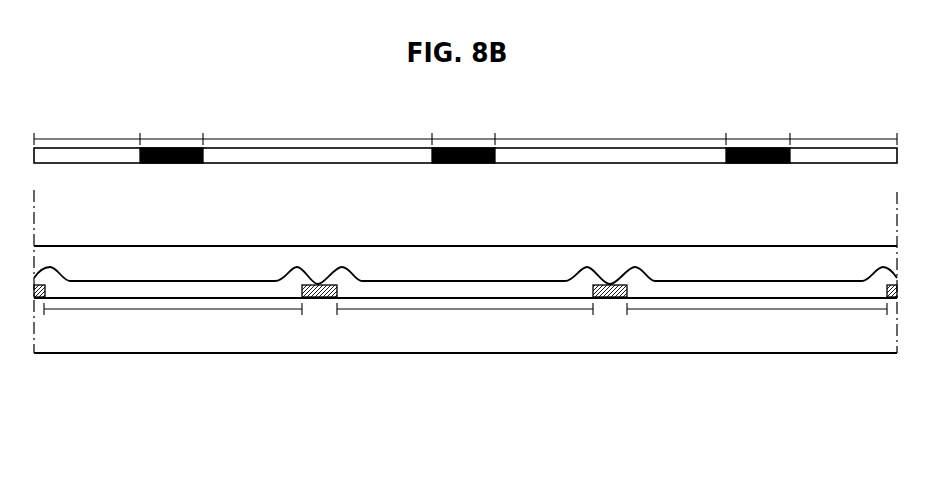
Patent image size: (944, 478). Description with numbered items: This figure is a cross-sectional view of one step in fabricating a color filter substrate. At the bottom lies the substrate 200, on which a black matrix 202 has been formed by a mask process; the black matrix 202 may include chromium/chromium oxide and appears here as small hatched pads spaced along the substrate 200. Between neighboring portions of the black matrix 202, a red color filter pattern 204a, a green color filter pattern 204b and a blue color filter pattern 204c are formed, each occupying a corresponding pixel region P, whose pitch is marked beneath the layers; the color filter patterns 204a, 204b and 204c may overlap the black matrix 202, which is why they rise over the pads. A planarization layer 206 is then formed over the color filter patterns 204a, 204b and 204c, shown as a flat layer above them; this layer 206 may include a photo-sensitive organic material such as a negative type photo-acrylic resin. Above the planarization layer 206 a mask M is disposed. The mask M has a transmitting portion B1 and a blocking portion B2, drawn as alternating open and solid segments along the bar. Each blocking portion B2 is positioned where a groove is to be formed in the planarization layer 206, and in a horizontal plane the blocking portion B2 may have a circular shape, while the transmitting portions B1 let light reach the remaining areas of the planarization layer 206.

The substrate 200 is at (861, 338).
The black matrix 202 is at (318, 302).
The red color filter pattern 204a is at (138, 292).
The green color filter pattern 204b is at (437, 292).
The blue color filter pattern 204c is at (728, 292).
The planarization layer 206 is at (742, 254).
The mask M is at (522, 163).
The transmitting portion B1 is at (465, 131).
The blocking portion B2 is at (455, 129).
The pixel region P is at (465, 309).